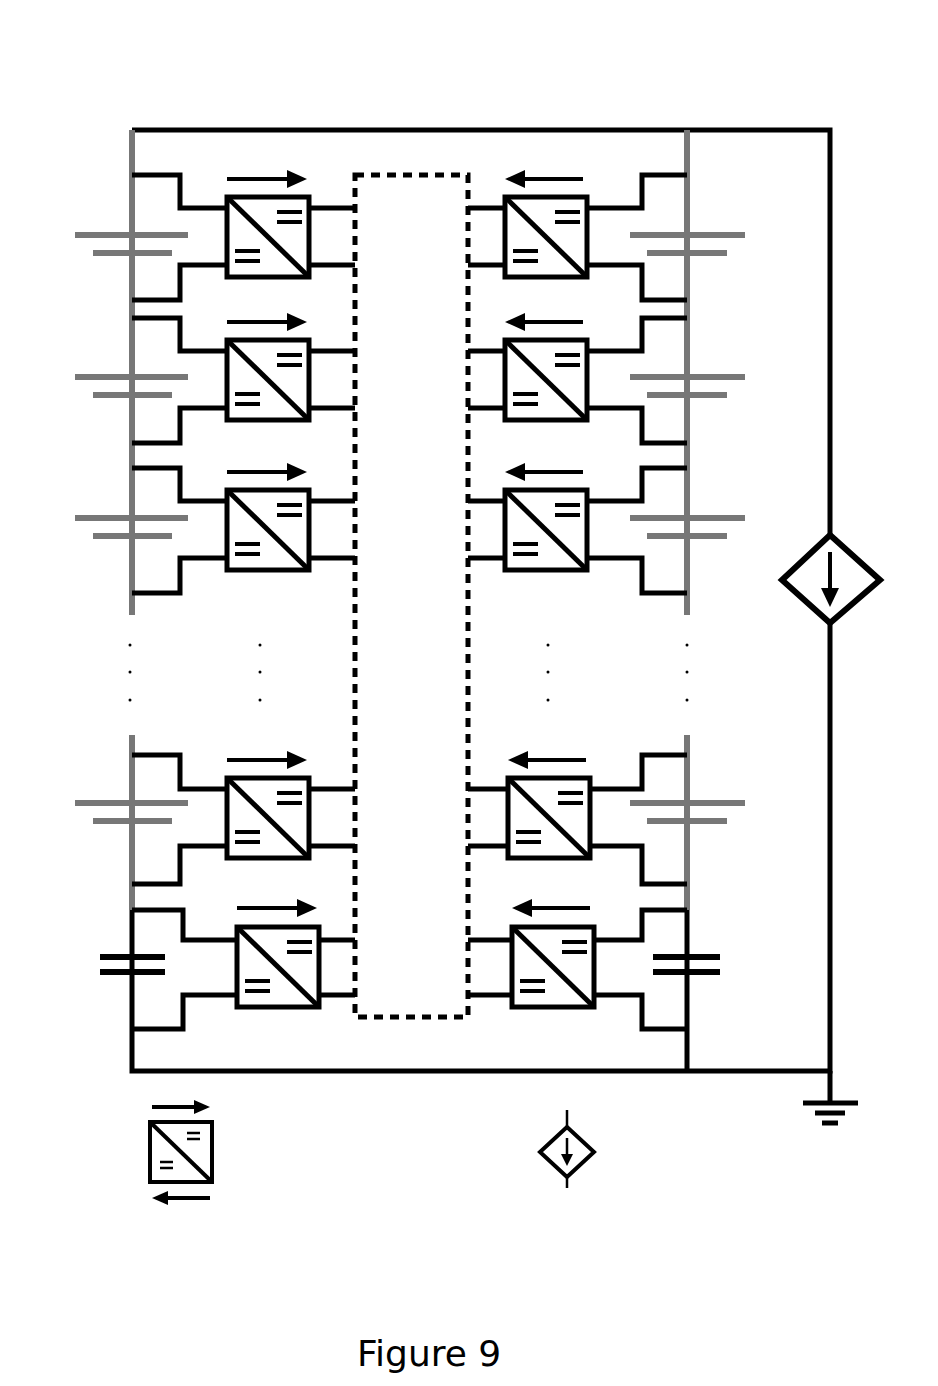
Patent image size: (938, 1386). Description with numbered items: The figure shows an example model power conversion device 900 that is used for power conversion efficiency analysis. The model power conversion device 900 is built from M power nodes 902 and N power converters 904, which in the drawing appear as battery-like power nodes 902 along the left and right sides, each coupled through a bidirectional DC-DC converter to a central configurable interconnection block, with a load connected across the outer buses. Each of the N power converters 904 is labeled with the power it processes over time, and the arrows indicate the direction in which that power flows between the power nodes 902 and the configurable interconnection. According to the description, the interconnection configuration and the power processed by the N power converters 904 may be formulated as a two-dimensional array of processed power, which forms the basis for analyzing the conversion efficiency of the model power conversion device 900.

The model power conversion device 900 is at (42, 46).
The power node 902 is at (121, 198).
The power converter 904 is at (211, 182).